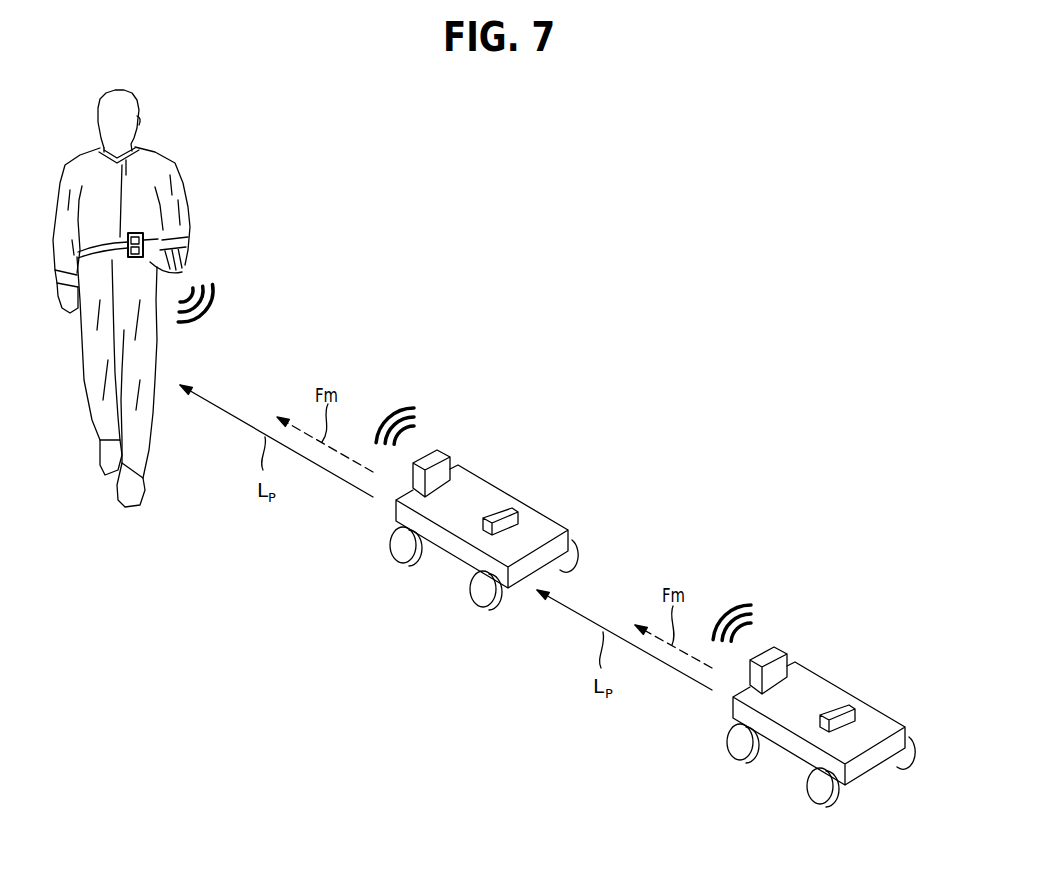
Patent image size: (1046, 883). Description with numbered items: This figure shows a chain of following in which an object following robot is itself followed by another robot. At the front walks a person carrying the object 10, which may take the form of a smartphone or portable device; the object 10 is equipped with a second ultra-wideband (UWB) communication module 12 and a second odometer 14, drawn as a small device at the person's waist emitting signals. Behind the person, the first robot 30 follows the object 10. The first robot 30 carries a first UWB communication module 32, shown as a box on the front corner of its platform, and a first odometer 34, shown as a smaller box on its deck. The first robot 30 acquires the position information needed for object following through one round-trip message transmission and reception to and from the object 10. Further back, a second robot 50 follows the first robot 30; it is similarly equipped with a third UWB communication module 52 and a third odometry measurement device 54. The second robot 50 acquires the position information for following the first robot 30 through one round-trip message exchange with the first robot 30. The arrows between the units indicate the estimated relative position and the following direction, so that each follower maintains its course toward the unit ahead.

The object 10 is at (188, 236).
The second ultra-wideband (UWB) communication module 12 is at (145, 234).
The second odometer 14 is at (146, 251).
The object following robot 30 is at (493, 499).
The first UWB communication module 32 is at (437, 450).
The first odometer 34 is at (506, 505).
The second robot 50 is at (829, 695).
The third UWB communication module 52 is at (768, 639).
The third odometry measurement device 54 is at (838, 686).